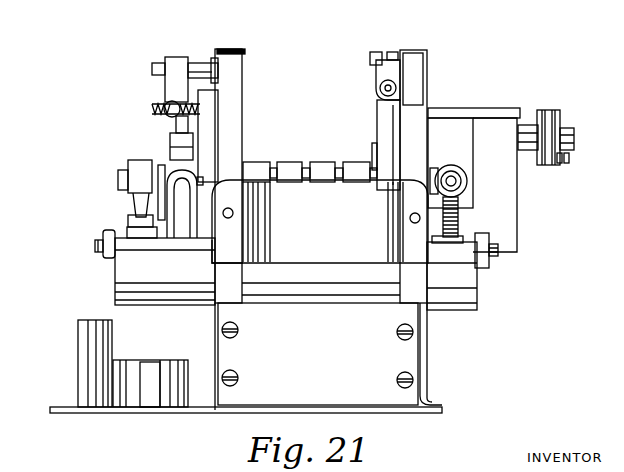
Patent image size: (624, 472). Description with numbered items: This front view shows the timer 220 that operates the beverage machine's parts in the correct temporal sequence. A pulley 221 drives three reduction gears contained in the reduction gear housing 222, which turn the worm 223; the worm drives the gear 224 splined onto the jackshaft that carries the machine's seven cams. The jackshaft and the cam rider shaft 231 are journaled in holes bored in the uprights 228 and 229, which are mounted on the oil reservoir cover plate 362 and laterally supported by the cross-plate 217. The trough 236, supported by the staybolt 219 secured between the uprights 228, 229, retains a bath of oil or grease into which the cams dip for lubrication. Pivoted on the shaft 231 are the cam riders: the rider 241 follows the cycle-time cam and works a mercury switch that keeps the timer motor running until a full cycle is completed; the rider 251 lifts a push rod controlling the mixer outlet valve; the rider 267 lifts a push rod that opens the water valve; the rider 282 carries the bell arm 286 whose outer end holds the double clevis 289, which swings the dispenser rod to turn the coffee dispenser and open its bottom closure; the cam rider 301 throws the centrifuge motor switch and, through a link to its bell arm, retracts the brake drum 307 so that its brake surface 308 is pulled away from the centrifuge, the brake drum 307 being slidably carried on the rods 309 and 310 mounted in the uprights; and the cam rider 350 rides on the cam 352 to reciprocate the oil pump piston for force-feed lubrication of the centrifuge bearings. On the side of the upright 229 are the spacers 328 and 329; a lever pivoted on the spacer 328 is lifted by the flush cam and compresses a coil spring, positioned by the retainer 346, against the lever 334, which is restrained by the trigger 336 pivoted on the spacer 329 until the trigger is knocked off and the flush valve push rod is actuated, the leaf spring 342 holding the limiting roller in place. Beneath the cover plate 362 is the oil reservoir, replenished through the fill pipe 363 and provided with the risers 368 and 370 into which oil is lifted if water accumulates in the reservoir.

The cross-plate 217 is at (420, 358).
The staybolt 219 is at (95, 247).
The timer 220 is at (430, 396).
The pulley 221 is at (558, 115).
The reduction gear housing 222 is at (508, 195).
The worm 223 is at (466, 181).
The gear 224 is at (455, 224).
The upright 228 is at (430, 68).
The upright 229 is at (235, 63).
The cam rider shaft 231 is at (443, 165).
The trough 236 is at (115, 277).
The rider 241 is at (283, 158).
The rider 251 is at (347, 158).
The rider 267 is at (270, 152).
The rider 282 is at (374, 160).
The bell arm 286 is at (382, 110).
The double clevis 289 is at (378, 88).
The cam rider 301 is at (320, 153).
The brake drum 307 is at (224, 258).
The brake surface 308 is at (307, 253).
The rod 309 is at (411, 219).
The rod 310 is at (233, 212).
The spacer 328 is at (207, 142).
The spacer 329 is at (203, 62).
The lever 334 is at (170, 138).
The trigger 336 is at (175, 60).
The leaf spring 342 is at (183, 208).
The retainer 346 is at (160, 110).
The cam rider 350 is at (140, 158).
The cam 352 is at (127, 222).
The oil reservoir cover plate 362 is at (245, 413).
The fill pipe 363 is at (78, 356).
The riser 368 is at (120, 360).
The riser 370 is at (180, 360).